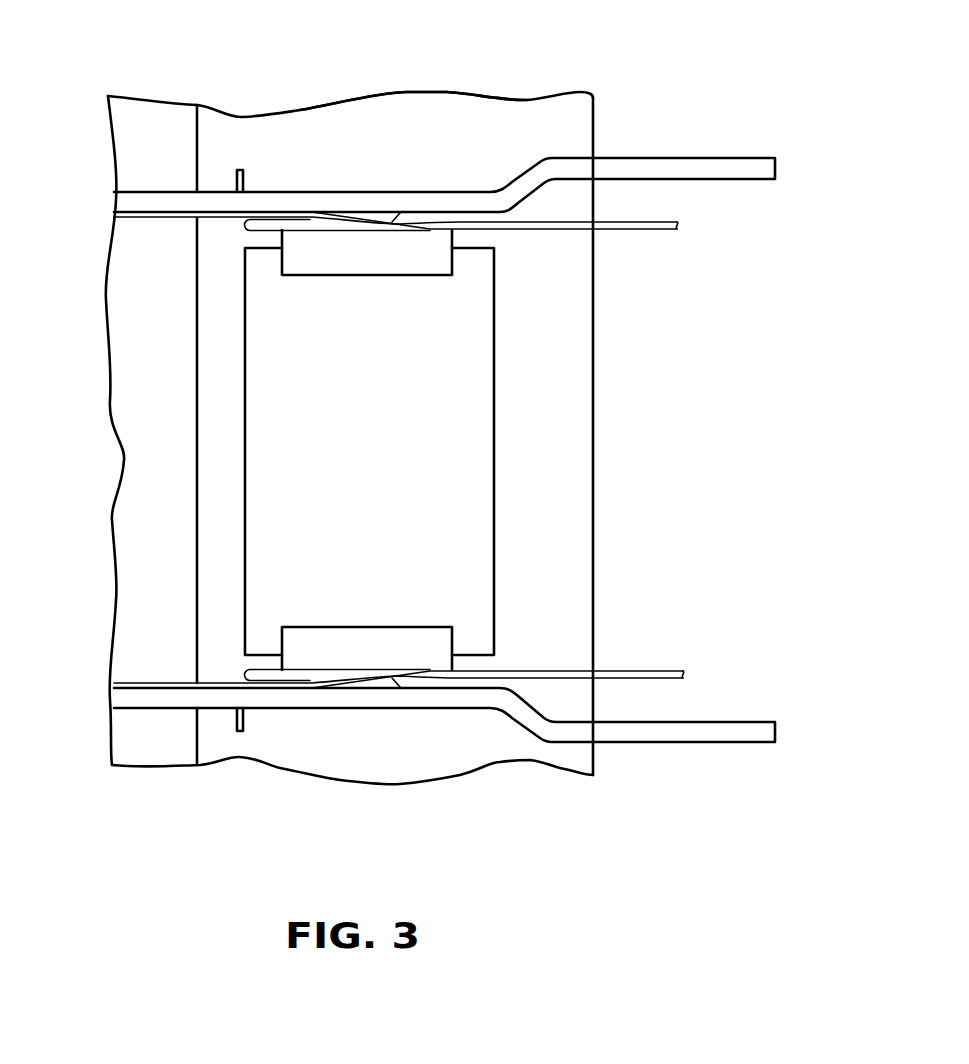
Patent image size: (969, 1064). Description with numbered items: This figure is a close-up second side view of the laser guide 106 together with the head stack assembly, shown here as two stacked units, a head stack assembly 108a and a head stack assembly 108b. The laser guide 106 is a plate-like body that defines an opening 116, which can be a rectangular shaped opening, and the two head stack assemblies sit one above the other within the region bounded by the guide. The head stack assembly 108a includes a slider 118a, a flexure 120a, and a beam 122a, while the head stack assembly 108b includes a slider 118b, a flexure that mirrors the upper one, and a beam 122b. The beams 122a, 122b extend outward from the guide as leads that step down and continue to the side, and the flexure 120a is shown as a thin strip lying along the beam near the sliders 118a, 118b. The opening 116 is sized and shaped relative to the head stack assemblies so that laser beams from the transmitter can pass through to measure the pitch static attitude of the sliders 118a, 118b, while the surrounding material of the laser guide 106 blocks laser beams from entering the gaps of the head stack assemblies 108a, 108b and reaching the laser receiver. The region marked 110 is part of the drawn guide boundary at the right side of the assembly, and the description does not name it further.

The laser guide 106 is at (465, 135).
The package body 110 is at (553, 113).
The head stack assembly 108a is at (707, 165).
The head stack assembly 108b is at (680, 732).
The opening 116 is at (285, 417).
The slider 118a is at (370, 265).
The slider 118b is at (367, 643).
The flexure 120a is at (367, 213).
The beam 122a is at (282, 198).
The beam 122b is at (232, 693).